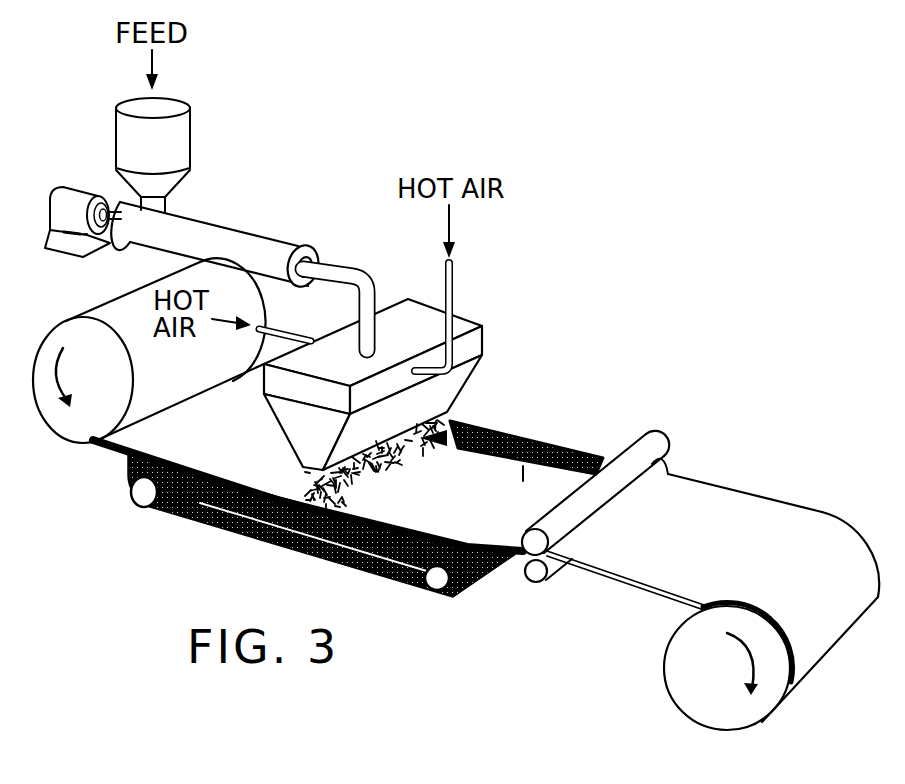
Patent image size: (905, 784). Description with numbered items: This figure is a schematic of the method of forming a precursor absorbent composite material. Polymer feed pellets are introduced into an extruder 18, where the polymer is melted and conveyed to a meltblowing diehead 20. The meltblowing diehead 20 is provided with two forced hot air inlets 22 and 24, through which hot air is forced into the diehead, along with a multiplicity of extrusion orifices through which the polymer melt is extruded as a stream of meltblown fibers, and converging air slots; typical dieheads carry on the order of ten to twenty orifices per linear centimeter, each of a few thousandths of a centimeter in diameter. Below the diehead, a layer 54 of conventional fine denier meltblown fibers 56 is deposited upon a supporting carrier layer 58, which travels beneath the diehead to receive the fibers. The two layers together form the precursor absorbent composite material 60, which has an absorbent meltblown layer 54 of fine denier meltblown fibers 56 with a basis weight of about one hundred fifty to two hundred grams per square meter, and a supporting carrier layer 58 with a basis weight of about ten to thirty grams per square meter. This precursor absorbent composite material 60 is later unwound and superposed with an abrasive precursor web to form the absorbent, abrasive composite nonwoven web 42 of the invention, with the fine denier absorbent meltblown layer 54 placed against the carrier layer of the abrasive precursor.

The extruder 18 is at (278, 222).
The meltblowing diehead 20 is at (513, 337).
The forced hot air inlet 22 is at (272, 326).
The forced hot air inlet 24 is at (456, 295).
The absorbent, abrasive composite nonwoven web 42 is at (207, 527).
The layer of fine denier meltblown fibers 54 is at (543, 447).
The fine denier meltblown fibers 56 is at (480, 424).
The supporting carrier layer 58 is at (126, 459).
The precursor absorbent composite material 60 is at (516, 533).